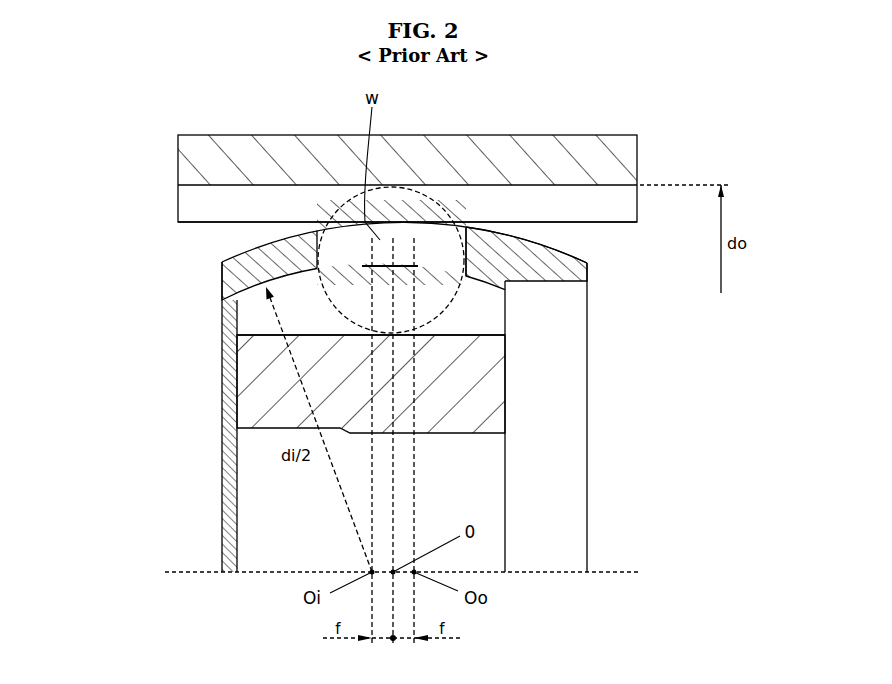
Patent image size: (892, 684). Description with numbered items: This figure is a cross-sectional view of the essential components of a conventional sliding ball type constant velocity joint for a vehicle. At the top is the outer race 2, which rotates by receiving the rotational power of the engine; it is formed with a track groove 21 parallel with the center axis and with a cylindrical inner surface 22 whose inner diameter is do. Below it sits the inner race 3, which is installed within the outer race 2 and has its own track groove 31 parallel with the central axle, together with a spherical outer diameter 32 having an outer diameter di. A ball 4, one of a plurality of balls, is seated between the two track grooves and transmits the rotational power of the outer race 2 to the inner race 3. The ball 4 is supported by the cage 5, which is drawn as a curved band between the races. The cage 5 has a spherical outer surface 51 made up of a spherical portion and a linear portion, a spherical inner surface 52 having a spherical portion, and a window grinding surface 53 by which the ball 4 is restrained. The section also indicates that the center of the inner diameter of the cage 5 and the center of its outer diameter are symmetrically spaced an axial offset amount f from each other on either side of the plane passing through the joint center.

The outer race 2 is at (523, 146).
The track groove 21 is at (577, 183).
The inner surface 22 is at (207, 224).
The inner race 3 is at (253, 393).
The track groove 31 is at (485, 334).
The outer diameter 32 is at (223, 322).
The ball 4 is at (340, 210).
The cage 5 is at (587, 269).
The spherical outer surface 51 is at (560, 254).
The spherical inner surface 52 is at (586, 281).
The window grinding surface 53 is at (462, 232).